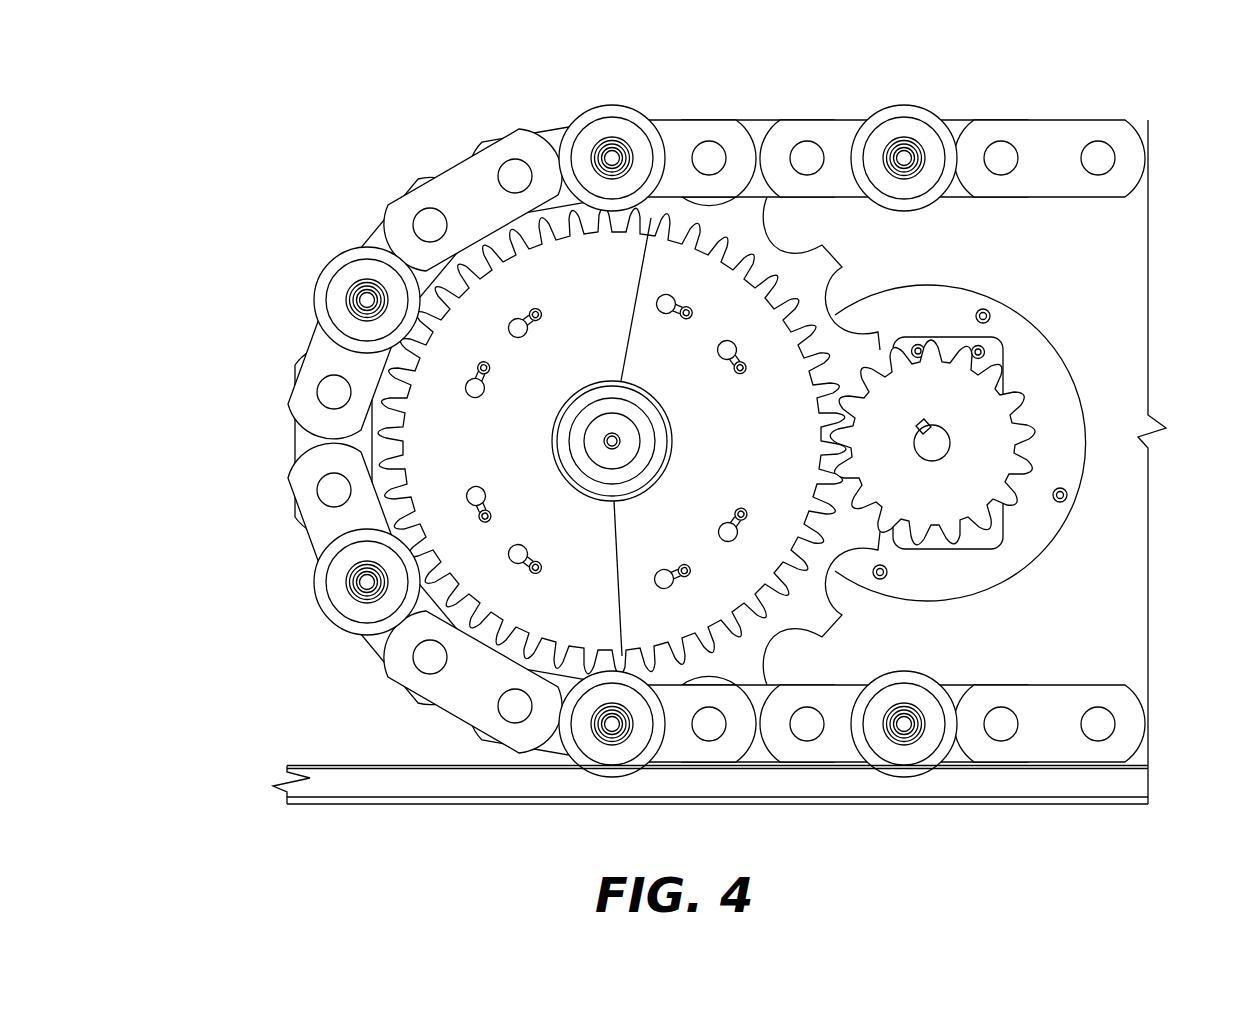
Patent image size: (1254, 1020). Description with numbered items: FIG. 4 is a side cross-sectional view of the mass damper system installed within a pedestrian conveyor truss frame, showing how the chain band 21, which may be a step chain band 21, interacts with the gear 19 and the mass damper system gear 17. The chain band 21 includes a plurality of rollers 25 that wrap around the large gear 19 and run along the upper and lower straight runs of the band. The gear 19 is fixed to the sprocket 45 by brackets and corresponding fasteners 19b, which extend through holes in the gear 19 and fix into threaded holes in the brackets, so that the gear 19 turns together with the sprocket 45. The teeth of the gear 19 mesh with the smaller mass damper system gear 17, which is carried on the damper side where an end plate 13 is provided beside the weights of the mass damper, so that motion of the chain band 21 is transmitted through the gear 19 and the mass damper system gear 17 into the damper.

The end plate 13 is at (1043, 519).
The mass damper system gear 17 is at (1030, 401).
The gear 19 is at (498, 287).
The fasteners 19b is at (472, 366).
The chain band 21 is at (679, 102).
The rollers 25 is at (586, 110).
The sprocket 45 is at (832, 249).